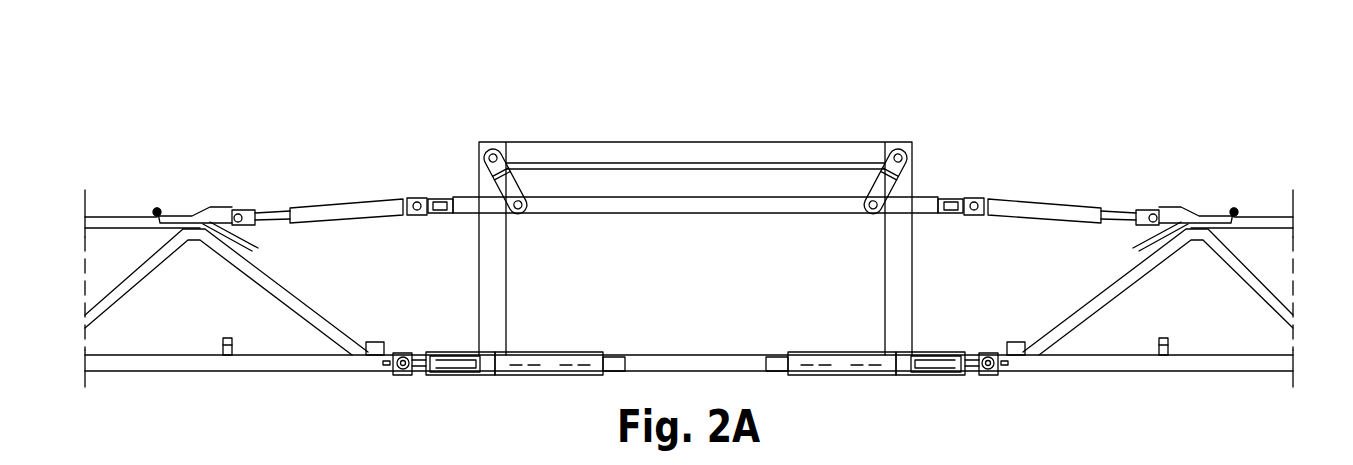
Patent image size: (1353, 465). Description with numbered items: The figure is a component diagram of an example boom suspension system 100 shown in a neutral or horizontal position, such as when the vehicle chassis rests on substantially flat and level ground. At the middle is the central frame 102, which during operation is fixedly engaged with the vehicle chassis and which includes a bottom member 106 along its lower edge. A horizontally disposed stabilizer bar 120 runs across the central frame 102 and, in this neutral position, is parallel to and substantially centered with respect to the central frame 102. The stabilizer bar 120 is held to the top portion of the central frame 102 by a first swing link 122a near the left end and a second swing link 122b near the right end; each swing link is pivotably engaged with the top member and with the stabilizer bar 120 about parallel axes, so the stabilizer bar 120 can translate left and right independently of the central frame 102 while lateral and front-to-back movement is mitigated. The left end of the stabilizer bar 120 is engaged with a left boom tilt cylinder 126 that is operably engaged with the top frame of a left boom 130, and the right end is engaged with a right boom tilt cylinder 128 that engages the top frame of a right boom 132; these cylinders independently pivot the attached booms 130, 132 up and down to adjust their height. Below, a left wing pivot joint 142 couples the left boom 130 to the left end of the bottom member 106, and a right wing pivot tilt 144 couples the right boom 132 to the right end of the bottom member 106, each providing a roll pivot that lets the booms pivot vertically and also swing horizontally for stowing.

The boom suspension system 100 is at (940, 105).
The central frame 102 is at (460, 148).
The bottom member 106 is at (683, 353).
The stabilizer bar 120 is at (705, 214).
The first swing link 122a is at (521, 222).
The second swing link 122b is at (868, 220).
The left boom tilt cylinder 126 is at (342, 210).
The right boom tilt cylinder 128 is at (1032, 208).
The left boom 130 is at (152, 190).
The right boom 132 is at (1242, 200).
The left wing pivot joint 142 is at (420, 378).
The right wing pivot tilt 144 is at (971, 378).